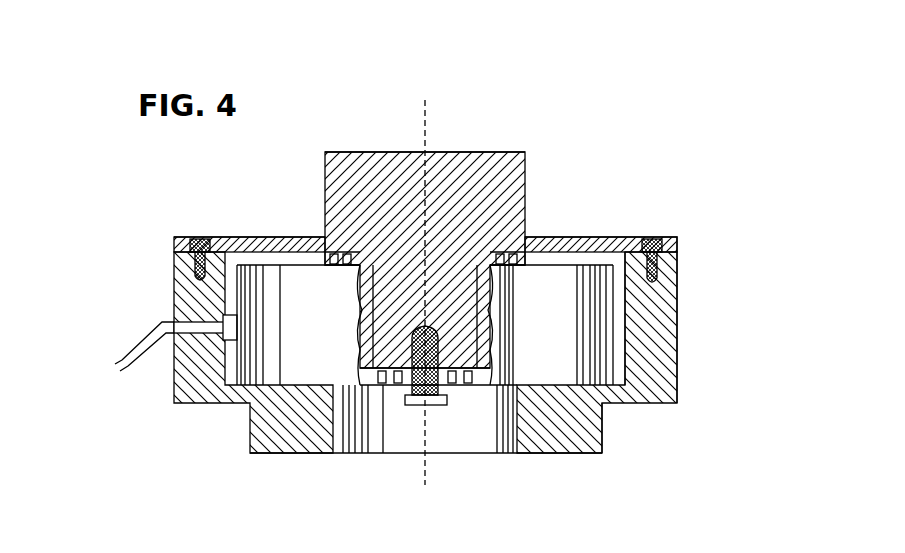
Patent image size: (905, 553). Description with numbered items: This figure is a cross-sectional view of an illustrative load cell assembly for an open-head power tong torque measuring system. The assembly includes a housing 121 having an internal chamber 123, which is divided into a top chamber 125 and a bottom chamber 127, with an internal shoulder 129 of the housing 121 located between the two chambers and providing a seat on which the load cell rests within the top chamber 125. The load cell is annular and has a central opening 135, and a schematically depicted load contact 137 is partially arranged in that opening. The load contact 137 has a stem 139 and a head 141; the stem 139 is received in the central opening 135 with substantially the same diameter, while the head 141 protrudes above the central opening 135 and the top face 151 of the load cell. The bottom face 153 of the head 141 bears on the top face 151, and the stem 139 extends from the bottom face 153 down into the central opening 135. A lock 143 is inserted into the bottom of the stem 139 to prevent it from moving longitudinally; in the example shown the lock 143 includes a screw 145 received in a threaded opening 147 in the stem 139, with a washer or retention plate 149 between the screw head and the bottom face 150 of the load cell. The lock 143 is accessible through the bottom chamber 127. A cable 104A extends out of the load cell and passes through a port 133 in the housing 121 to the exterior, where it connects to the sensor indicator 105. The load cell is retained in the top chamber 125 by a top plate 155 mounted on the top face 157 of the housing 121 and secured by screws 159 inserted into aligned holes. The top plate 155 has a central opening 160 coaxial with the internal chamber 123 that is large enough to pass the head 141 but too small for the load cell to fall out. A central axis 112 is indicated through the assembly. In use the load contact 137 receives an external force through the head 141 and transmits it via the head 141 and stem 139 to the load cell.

The cable 104A is at (135, 365).
The sensor indicator 105 is at (554, 203).
The central axis 112 is at (424, 108).
The housing 121 is at (682, 290).
The internal chamber 123 is at (627, 352).
The top chamber 125 is at (627, 293).
The bottom chamber 127 is at (340, 455).
The internal shoulder 129 is at (602, 397).
The port 133 is at (190, 315).
The central opening 135 is at (478, 335).
The load contact 137 is at (434, 148).
The stem 139 is at (470, 350).
The head 141 is at (367, 152).
The lock 143 is at (447, 445).
The screw 145 is at (415, 440).
The threaded opening 147 is at (412, 340).
The washer or retention plate 149 is at (372, 455).
The bottom face 150 is at (497, 455).
The top face 151 is at (336, 256).
The bottom face 153 is at (502, 265).
The top plate 155 is at (232, 240).
The top face 157 is at (186, 250).
The screws 159 is at (660, 245).
The central opening 160 is at (322, 248).